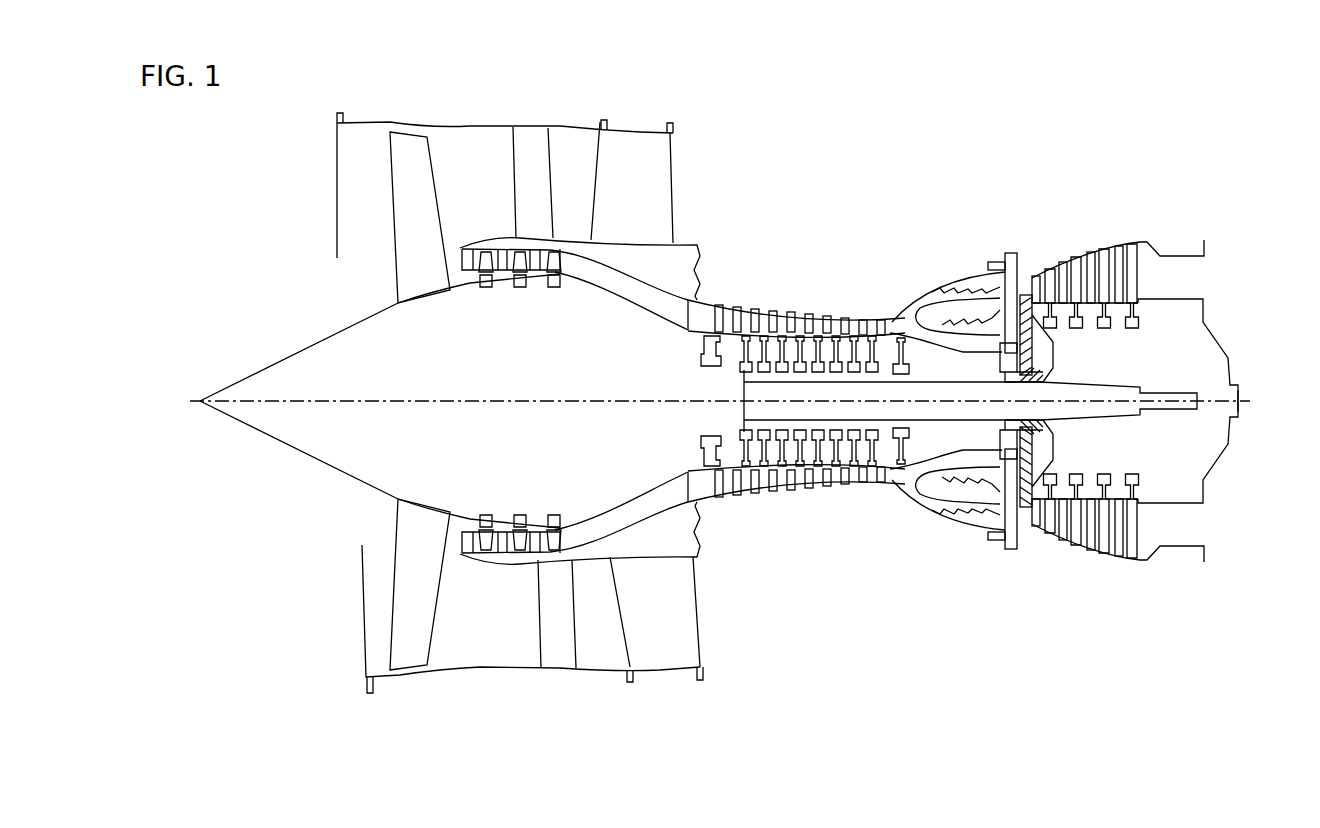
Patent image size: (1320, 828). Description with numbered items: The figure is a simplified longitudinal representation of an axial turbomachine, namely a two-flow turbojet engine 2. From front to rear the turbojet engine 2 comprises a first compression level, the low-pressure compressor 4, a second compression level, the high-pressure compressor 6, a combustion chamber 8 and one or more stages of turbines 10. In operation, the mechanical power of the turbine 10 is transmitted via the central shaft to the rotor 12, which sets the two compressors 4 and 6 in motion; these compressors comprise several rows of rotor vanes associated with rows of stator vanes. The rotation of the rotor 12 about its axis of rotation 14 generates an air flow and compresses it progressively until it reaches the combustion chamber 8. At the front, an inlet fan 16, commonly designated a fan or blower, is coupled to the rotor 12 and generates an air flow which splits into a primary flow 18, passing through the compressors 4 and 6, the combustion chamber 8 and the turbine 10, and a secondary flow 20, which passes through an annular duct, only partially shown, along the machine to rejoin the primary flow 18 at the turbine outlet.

The turbojet engine 2 is at (941, 155).
The low-pressure compressor 4 is at (483, 290).
The high-pressure compressor 6 is at (758, 320).
The combustion chamber 8 is at (923, 305).
The turbine 10 is at (1113, 278).
The rotor 12 is at (308, 432).
The axis of rotation 14 is at (523, 403).
The inlet fan 16 is at (415, 208).
The primary flow 18 is at (578, 270).
The secondary flow 20 is at (685, 174).